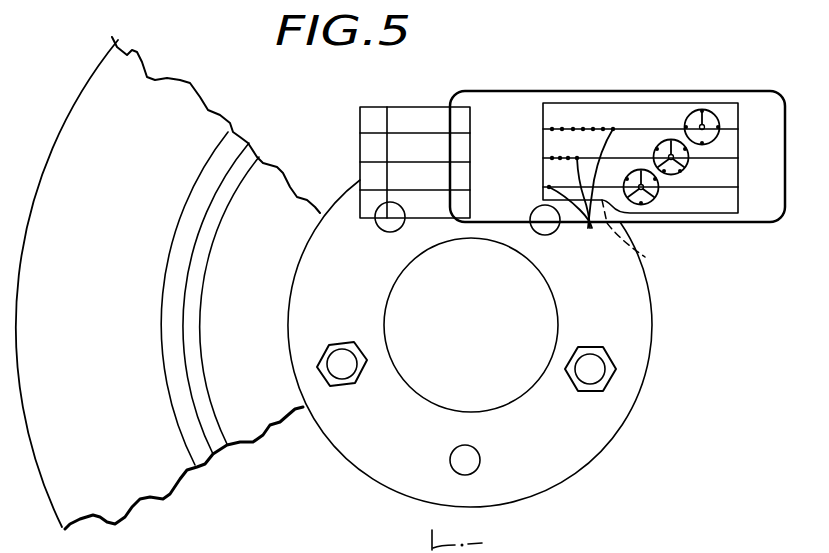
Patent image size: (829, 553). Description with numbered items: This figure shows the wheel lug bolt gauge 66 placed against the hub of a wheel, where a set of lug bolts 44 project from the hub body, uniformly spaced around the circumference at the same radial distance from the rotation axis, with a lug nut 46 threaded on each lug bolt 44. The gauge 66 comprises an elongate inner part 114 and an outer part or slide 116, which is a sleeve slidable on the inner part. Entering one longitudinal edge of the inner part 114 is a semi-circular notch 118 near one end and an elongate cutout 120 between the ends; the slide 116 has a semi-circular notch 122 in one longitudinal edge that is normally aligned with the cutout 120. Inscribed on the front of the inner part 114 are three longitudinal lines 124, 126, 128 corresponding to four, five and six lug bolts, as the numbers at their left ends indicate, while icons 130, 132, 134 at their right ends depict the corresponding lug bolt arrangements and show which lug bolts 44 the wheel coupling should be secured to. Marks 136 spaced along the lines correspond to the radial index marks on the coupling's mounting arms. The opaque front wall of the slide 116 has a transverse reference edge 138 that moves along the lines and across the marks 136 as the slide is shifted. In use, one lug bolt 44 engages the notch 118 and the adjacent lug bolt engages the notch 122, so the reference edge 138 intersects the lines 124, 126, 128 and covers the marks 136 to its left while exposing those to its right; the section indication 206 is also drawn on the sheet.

The lug bolt 44 is at (466, 338).
The lug nut 46 is at (347, 342).
The wheel lug bolt gauge 66 is at (503, 84).
The inner part 114 is at (404, 107).
The slide 116 is at (658, 92).
The semi-circular notch 118 is at (384, 220).
The elongate cutout 120 is at (646, 237).
The semi-circular notch 122 is at (548, 236).
The longitudinal line 124 is at (360, 133).
The longitudinal line 126 is at (360, 162).
The longitudinal line 128 is at (362, 188).
The icon 130 is at (712, 115).
The icon 132 is at (688, 163).
The icon 134 is at (655, 198).
The marks 136 is at (581, 197).
The reference edge 138 is at (543, 186).
The section line 206 is at (480, 540).